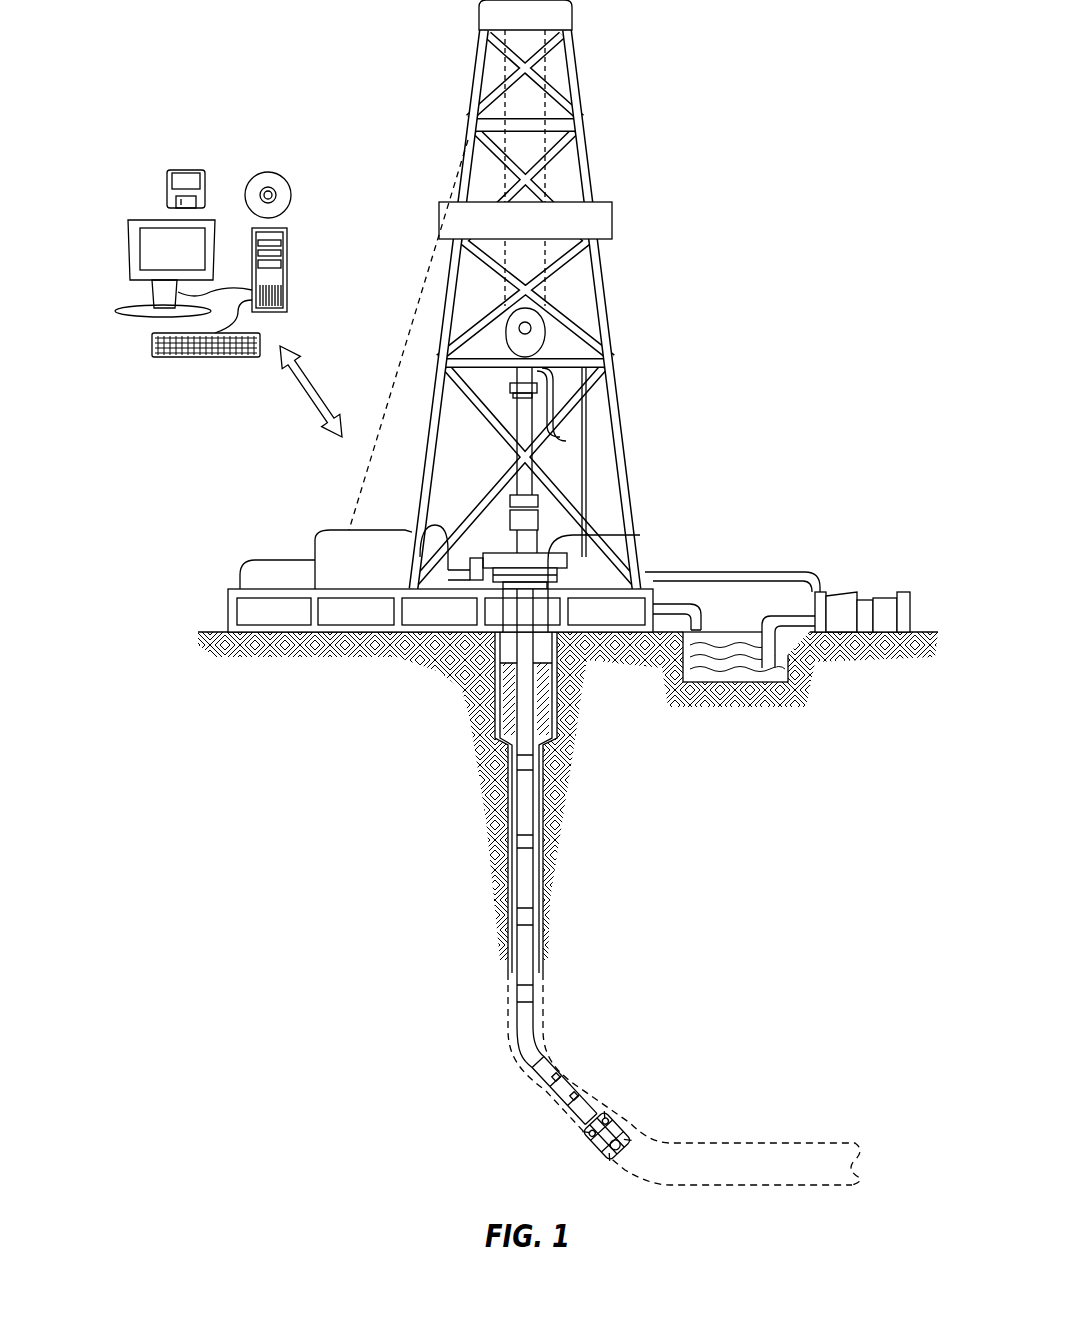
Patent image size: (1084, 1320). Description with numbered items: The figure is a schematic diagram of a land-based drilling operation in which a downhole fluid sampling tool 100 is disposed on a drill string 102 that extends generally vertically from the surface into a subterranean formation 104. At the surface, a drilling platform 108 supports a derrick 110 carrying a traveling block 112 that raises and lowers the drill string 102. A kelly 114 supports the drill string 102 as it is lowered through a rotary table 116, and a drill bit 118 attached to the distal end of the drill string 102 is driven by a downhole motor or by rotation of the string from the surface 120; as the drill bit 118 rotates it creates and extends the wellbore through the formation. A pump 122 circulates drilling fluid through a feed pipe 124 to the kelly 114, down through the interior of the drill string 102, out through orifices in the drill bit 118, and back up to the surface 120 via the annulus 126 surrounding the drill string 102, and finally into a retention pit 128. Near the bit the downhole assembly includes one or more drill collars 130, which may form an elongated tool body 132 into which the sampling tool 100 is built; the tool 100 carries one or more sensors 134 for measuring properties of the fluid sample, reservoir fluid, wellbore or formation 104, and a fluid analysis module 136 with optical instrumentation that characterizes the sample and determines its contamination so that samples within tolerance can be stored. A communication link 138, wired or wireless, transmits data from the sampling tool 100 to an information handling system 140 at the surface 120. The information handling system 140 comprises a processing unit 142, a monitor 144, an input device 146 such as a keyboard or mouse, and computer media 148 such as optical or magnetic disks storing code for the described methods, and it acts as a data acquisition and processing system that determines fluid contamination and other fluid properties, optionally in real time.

The downhole fluid sampling tool 100 is at (526, 1096).
The drill string 102 is at (535, 818).
The subterranean formation 104 is at (772, 929).
The drilling platform 108 is at (228, 612).
The derrick 110 is at (585, 143).
The traveling block 112 is at (552, 330).
The kelly 114 is at (525, 415).
The rotary table 116 is at (562, 535).
The drill bit 118 is at (620, 1125).
The surface 120 is at (925, 632).
The pump 122 is at (845, 592).
The feed pipe 124 is at (762, 572).
The annulus 126 is at (510, 838).
The retention pit 128 is at (730, 668).
The drill collars 130 is at (575, 1097).
The tool body 132 is at (563, 1092).
The sensors 134 is at (575, 1115).
The fluid analysis module 136 is at (542, 1094).
The communication link 138 is at (298, 398).
The information handling system 140 is at (128, 156).
The processing unit 142 is at (290, 242).
The monitor 144 is at (133, 258).
The input device 146 is at (165, 357).
The computer media 148 is at (260, 172).